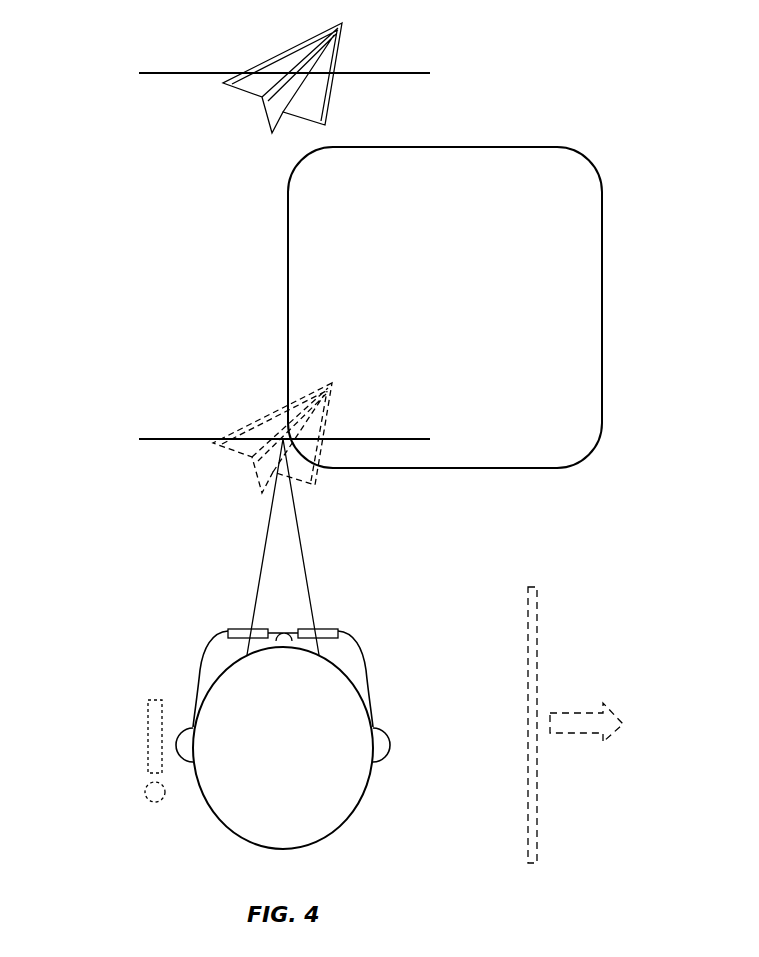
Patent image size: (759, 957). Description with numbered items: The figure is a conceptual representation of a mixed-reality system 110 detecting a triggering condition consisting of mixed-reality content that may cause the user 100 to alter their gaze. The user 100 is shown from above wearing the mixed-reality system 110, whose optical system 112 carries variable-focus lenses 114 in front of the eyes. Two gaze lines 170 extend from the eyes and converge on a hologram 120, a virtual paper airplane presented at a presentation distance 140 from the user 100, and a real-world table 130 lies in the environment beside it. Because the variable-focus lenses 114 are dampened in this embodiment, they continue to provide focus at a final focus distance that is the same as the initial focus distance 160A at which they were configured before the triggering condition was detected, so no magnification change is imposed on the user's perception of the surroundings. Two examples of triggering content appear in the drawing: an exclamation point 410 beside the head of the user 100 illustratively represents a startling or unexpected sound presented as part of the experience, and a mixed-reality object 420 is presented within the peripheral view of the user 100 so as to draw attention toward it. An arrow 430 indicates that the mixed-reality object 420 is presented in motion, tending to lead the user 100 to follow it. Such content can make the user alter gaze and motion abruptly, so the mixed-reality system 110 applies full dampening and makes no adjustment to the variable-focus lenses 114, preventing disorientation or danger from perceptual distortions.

The user 100 is at (352, 812).
The mixed-reality system 110 is at (190, 676).
The optical system 112 is at (226, 613).
The variable-focus lenses 114 is at (320, 629).
The hologram 120 is at (265, 62).
The real-world table 130 is at (453, 145).
The presentation distance 140 is at (140, 439).
The initial focus distance 160A is at (378, 72).
The gaze lines 170 is at (268, 528).
The exclamation point 410 is at (148, 757).
The mixed-reality object 420 is at (528, 785).
The arrow 430 is at (578, 733).